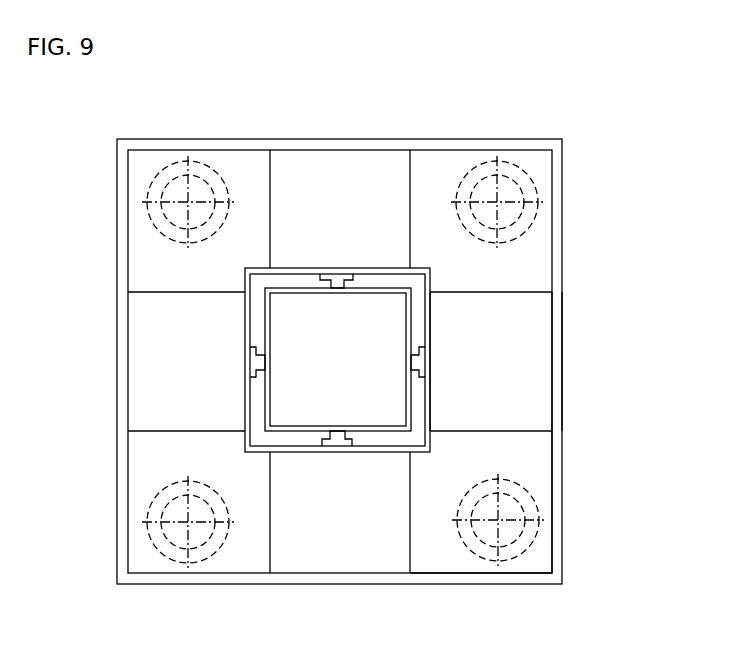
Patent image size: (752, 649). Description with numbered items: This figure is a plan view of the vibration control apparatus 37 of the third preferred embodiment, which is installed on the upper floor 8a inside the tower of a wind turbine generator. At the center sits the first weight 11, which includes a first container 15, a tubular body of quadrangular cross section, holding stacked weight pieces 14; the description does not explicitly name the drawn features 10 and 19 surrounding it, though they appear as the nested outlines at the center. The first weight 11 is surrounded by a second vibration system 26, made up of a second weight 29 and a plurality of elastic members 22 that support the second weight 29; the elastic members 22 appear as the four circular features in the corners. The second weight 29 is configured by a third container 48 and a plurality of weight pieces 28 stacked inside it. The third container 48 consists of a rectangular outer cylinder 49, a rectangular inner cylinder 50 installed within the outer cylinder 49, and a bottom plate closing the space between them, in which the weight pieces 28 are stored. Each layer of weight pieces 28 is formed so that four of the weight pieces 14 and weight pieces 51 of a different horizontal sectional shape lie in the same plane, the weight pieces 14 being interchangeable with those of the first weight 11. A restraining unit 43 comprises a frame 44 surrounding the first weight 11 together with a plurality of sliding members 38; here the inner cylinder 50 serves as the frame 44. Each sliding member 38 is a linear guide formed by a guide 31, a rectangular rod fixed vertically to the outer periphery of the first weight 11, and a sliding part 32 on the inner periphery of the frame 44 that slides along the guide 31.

The vibration control apparatus 37 is at (533, 100).
The weight pieces 28 is at (450, 139).
The second vibration system 26 is at (575, 330).
The second weight 29 is at (540, 385).
The outer cylinder 49 is at (557, 413).
The third container 48 is at (568, 455).
The elastic members 22 is at (153, 183).
The weight pieces 51 is at (146, 277).
The upper floor 8a is at (582, 553).
The weight pieces 14 is at (330, 203).
The outer housing 19 is at (414, 268).
The housing 10 is at (303, 284).
The first weight 11 is at (370, 300).
The first container 15 is at (378, 435).
The guide 31 is at (337, 434).
The sliding part 32 is at (337, 440).
The sliding member 38 is at (250, 345).
The frame 44 is at (250, 300).
The restraining unit 43 is at (175, 296).
The inner cylinder 50 is at (428, 390).